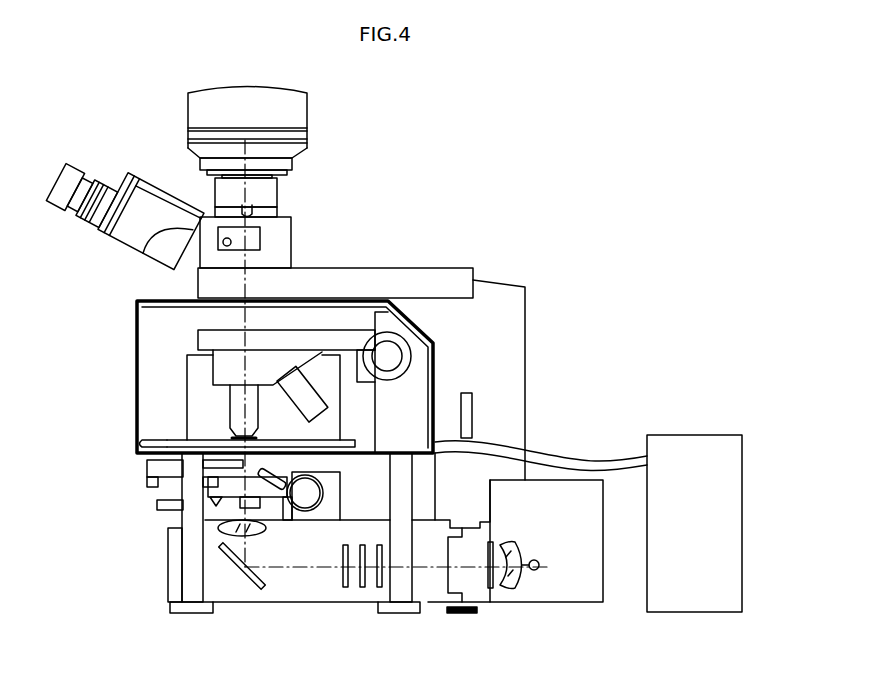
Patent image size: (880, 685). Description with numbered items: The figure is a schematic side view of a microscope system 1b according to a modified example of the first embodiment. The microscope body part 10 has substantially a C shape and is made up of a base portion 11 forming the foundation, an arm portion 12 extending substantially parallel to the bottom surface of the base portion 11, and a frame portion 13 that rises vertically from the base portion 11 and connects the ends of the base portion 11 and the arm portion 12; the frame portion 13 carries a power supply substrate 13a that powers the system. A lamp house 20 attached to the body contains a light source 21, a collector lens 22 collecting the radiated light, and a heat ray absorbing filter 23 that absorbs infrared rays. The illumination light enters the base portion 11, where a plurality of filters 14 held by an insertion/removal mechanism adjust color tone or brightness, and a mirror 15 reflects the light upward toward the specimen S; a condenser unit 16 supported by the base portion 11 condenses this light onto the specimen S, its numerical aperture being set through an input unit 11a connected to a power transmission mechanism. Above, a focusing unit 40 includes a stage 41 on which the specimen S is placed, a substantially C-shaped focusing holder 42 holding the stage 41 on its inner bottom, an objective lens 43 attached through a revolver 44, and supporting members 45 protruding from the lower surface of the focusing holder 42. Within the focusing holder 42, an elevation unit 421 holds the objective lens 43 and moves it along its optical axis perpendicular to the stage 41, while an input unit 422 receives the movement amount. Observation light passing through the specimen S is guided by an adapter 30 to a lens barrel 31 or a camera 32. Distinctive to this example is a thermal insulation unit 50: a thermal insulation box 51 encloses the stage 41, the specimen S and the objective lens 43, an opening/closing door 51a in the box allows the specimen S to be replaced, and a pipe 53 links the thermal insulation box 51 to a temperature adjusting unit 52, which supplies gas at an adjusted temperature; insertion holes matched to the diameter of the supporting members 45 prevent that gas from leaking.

The microscope system 1b is at (426, 128).
The microscope body part 10 is at (504, 264).
The base portion 11 is at (300, 598).
The input unit 11a is at (320, 492).
The arm portion 12 is at (442, 272).
The frame portion 13 is at (512, 314).
The power supply substrate 13a is at (472, 416).
The filters 14 is at (379, 588).
The mirror 15 is at (244, 584).
The condenser unit 16 is at (126, 490).
The lamp house 20 is at (587, 593).
The light source 21 is at (539, 573).
The collector lens 22 is at (514, 590).
The heat ray absorbing filter 23 is at (497, 590).
The adapter 30 is at (285, 236).
The lens barrel 31 is at (134, 172).
The camera 32 is at (300, 103).
The focusing unit 40 is at (152, 390).
The stage 41 is at (138, 444).
The focusing holder 42 is at (413, 383).
The elevation unit 421 is at (207, 340).
The input unit 422 is at (418, 348).
The objective lens 43 is at (237, 393).
The revolver 44 is at (225, 367).
The supporting members 45 is at (186, 562).
The thermal insulation unit 50 is at (699, 412).
The thermal insulation box 51 is at (178, 300).
The opening/closing door 51a is at (336, 357).
The temperature adjusting unit 52 is at (718, 432).
The pipe 53 is at (623, 452).
The specimen S is at (233, 438).